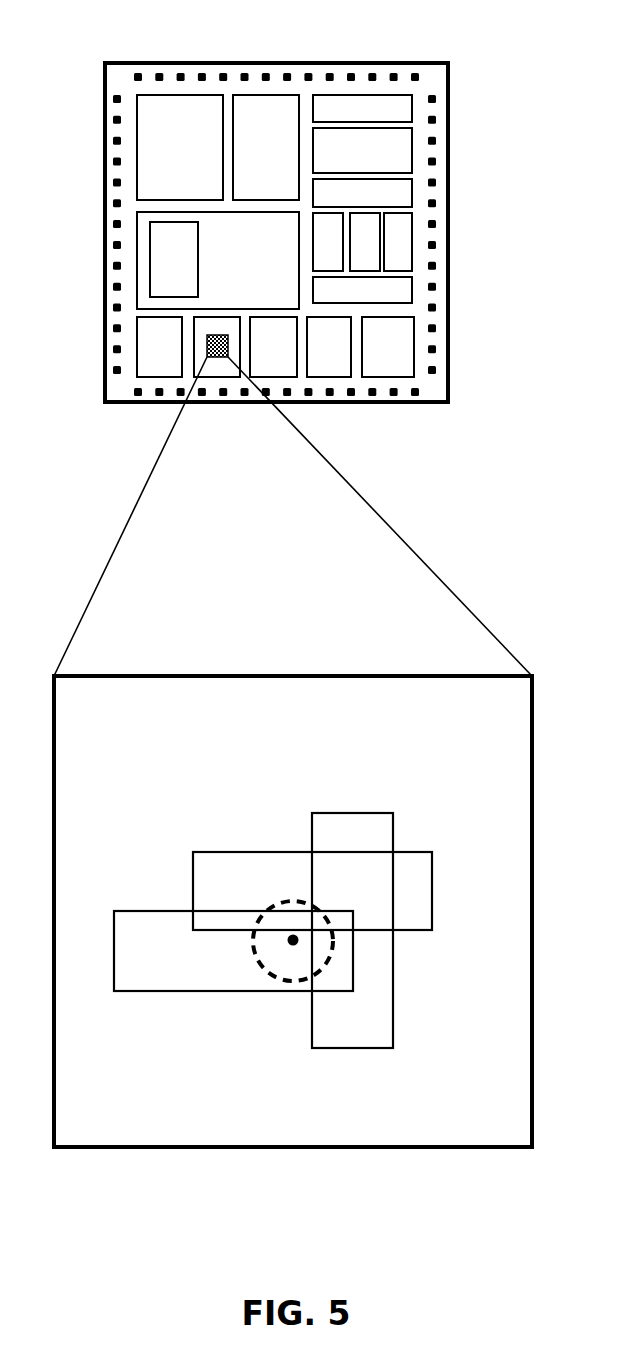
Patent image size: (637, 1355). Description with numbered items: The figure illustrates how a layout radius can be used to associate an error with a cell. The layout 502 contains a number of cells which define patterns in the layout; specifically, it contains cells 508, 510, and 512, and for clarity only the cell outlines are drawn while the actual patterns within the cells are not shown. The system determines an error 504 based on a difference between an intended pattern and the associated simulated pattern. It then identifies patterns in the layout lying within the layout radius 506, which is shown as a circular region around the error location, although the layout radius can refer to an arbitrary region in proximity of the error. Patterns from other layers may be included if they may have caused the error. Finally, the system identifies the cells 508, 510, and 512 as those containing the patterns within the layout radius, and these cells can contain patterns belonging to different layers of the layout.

The layout 502 is at (276, 203).
The error 504 is at (291, 942).
The layout radius 506 is at (280, 903).
The cell 508 is at (113, 921).
The cell 510 is at (377, 812).
The cell 512 is at (433, 912).